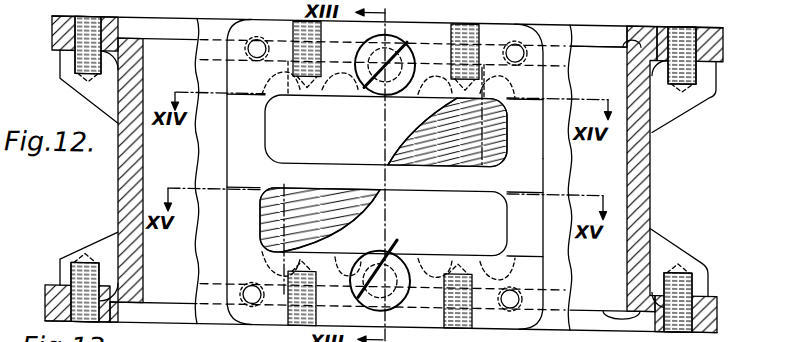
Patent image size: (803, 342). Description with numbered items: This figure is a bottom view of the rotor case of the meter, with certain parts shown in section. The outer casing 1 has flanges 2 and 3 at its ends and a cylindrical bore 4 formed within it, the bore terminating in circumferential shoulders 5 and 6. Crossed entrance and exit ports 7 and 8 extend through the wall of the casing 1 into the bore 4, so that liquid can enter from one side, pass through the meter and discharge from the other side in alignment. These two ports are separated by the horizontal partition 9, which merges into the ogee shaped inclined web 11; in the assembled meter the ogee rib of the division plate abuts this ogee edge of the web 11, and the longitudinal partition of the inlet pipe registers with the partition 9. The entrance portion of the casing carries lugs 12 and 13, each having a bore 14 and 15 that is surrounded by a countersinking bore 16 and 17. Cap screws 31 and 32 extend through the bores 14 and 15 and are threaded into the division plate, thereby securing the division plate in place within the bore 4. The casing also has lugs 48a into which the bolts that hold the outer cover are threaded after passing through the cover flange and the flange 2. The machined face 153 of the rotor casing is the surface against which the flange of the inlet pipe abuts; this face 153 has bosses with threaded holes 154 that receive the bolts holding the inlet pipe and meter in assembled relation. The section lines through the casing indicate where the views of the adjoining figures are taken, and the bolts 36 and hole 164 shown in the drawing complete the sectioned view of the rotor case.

The outer casing 1 is at (650, 196).
The flange 2 is at (723, 32).
The flange 3 is at (717, 299).
The cylindrical bore 4 is at (623, 145).
The circumferential shoulder 5 is at (630, 31).
The circumferential shoulder 6 is at (603, 301).
The entrance port 7 is at (328, 153).
The exit port 8 is at (468, 221).
The horizontal partition 9 is at (463, 166).
The ogee shaped inclined web 11 is at (413, 157).
The lug 12 is at (292, 96).
The lug 13 is at (370, 247).
The bore 14 is at (383, 97).
The bore 15 is at (410, 252).
The countersinking bore 16 is at (465, 99).
The countersinking bore 17 is at (401, 300).
The cap screw 31 is at (407, 36).
The cap screw 32 is at (397, 234).
The lower clamping bolt 36 is at (98, 237).
The lug 48a is at (88, 86).
The machined face 153 is at (542, 148).
The threaded hole 154 is at (542, 69).
The bolt hole 164 is at (247, 311).